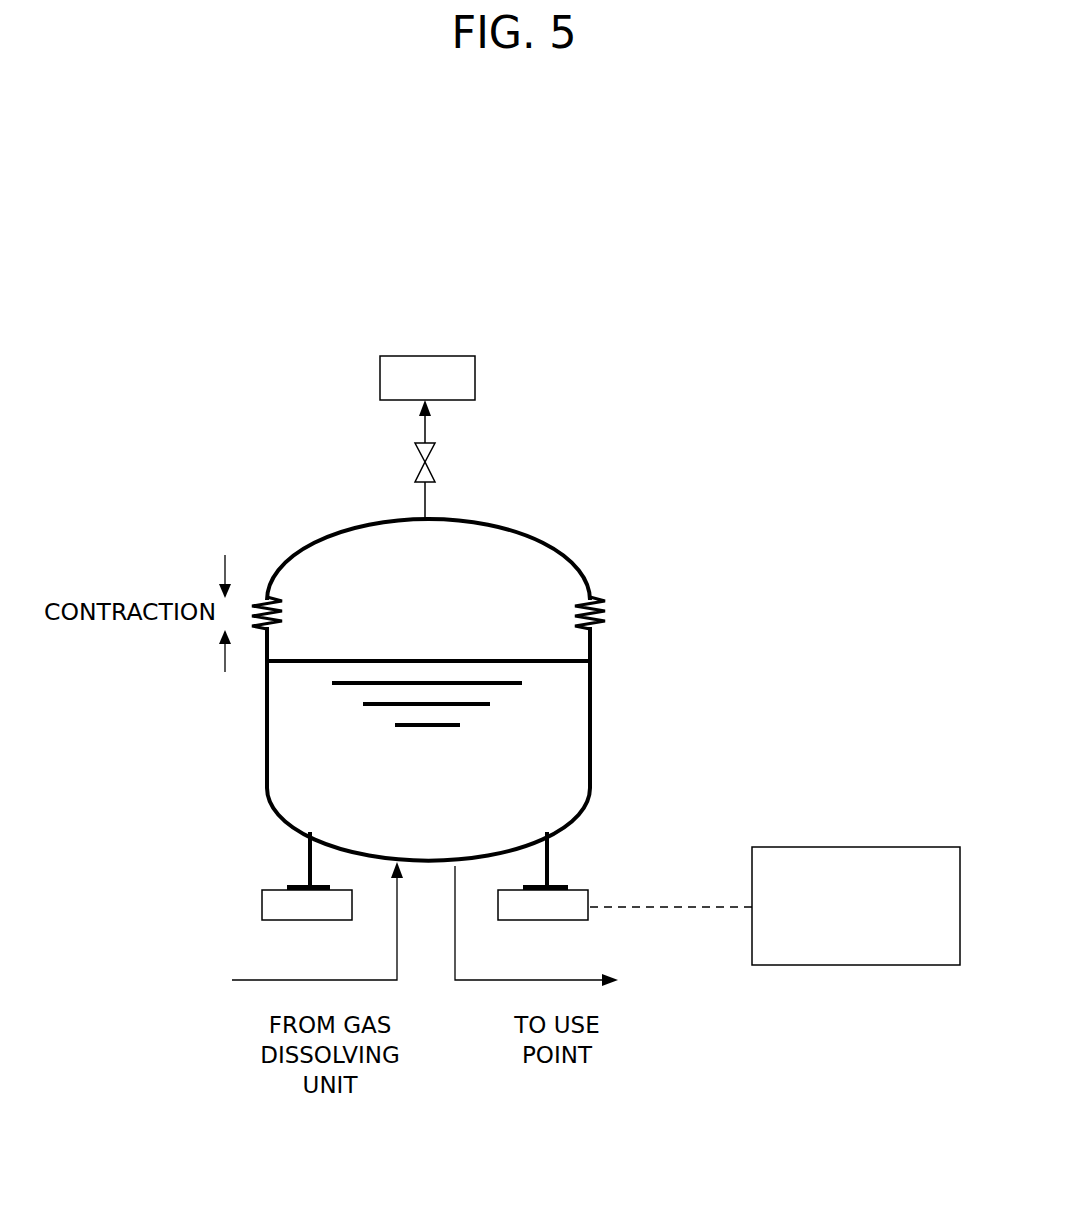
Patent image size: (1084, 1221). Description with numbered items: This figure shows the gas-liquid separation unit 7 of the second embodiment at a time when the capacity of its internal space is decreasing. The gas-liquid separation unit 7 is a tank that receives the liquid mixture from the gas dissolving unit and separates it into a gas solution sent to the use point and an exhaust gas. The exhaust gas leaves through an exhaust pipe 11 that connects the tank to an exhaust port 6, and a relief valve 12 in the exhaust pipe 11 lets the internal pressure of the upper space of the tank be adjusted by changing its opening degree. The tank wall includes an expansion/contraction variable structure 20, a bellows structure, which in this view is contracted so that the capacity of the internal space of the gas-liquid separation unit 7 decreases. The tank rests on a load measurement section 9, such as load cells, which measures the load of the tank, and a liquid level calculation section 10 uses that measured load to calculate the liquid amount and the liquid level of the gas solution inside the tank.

The exhaust port 6 is at (458, 357).
The gas-liquid separation unit 7 is at (566, 557).
The load measurement section 9 is at (262, 890).
The liquid level calculation section 10 is at (870, 847).
The exhaust pipe 11 is at (415, 493).
The relief valve 12 is at (433, 468).
The expansion/contraction variable structure 20 is at (600, 605).